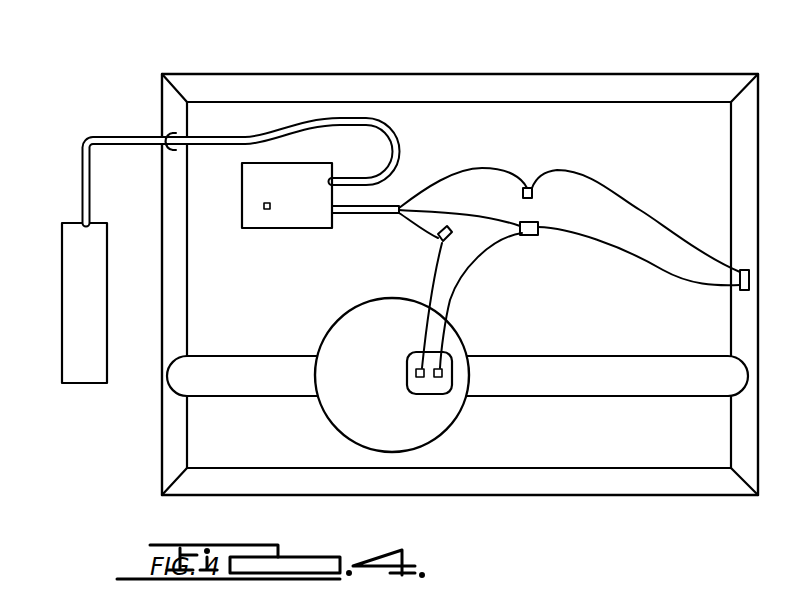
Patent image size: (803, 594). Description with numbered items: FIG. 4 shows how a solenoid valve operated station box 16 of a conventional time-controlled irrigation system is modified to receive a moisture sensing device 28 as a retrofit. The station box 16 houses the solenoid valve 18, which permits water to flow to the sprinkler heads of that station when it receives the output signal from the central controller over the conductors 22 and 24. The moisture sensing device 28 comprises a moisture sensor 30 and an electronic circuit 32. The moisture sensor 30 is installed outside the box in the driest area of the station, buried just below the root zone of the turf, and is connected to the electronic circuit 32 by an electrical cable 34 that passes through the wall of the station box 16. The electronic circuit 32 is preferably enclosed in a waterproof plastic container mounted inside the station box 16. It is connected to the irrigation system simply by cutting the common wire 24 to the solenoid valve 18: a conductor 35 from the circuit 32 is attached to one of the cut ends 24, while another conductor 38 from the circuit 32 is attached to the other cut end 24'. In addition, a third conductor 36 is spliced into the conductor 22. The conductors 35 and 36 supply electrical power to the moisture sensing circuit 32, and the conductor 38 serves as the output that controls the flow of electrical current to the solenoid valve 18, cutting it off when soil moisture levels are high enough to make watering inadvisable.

The station box 16 is at (473, 73).
The solenoid valve 18 is at (329, 330).
The conductor 22 is at (465, 274).
The common wire 24 is at (640, 223).
The cut end of common wire 24' is at (400, 305).
The moisture sensing device 28 is at (52, 181).
The moisture sensor 30 is at (75, 383).
The electronic circuit 32 is at (270, 216).
The electrical cable 34 is at (117, 136).
The conductor 35 is at (447, 172).
The third conductor 36 is at (474, 212).
The conductor 38 is at (410, 226).